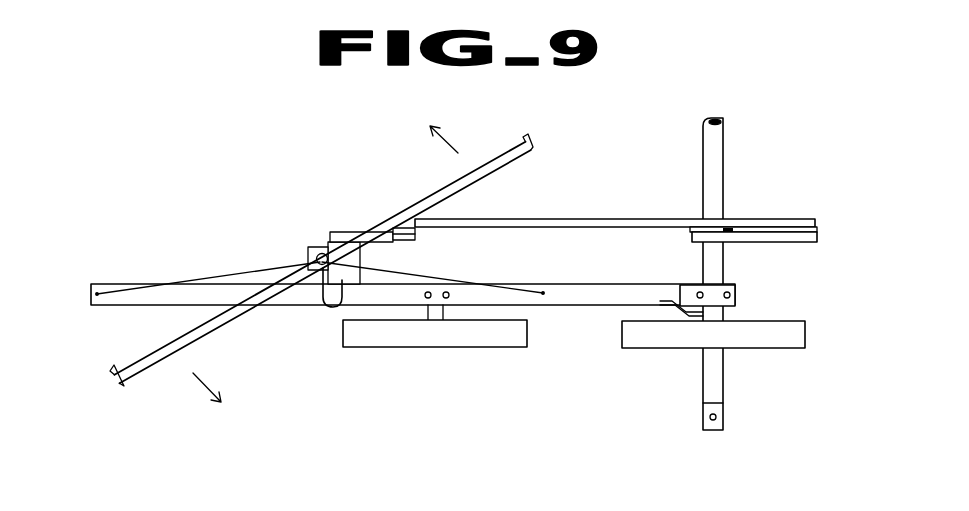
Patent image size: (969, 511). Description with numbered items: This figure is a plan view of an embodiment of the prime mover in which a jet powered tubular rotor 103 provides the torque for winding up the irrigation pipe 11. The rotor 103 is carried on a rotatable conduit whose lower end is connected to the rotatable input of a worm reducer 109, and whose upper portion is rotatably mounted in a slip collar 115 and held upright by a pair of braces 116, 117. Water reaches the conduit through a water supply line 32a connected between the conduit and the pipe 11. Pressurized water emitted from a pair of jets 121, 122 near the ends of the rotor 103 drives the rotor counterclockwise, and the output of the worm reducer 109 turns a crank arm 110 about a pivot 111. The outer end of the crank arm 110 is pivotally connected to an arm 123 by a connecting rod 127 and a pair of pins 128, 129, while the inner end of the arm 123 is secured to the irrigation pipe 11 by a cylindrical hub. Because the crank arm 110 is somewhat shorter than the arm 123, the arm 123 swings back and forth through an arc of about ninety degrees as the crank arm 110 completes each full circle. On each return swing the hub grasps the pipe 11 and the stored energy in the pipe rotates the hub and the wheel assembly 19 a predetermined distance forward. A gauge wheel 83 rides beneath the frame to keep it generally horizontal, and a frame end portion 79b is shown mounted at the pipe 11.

The irrigation pipe 11 is at (727, 129).
The wheel assembly 19 is at (773, 350).
The water supply line 32a is at (583, 306).
The mounting bracket end 79b is at (737, 294).
The gauge wheel 83 is at (458, 348).
The jet powered tubular rotor 103 is at (496, 157).
The worm reducer 109 is at (343, 281).
The crank arm 110 is at (357, 230).
The pivot 111 is at (320, 247).
The slip collar 115 is at (311, 250).
The brace 116 is at (230, 272).
The brace 117 is at (450, 279).
The jet 121 is at (116, 370).
The jet 122 is at (531, 152).
The arm 123 is at (800, 242).
The connecting rod 127 is at (580, 219).
The pin 128 is at (409, 232).
The pin 129 is at (815, 229).